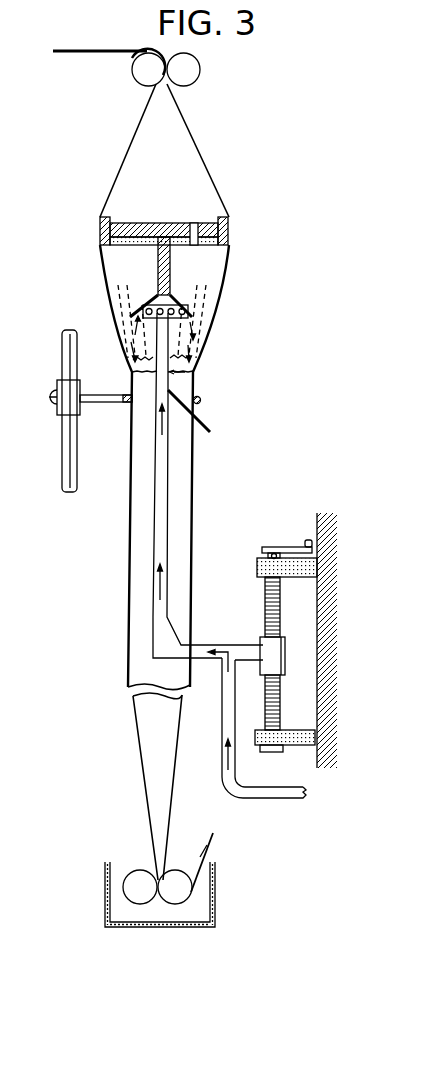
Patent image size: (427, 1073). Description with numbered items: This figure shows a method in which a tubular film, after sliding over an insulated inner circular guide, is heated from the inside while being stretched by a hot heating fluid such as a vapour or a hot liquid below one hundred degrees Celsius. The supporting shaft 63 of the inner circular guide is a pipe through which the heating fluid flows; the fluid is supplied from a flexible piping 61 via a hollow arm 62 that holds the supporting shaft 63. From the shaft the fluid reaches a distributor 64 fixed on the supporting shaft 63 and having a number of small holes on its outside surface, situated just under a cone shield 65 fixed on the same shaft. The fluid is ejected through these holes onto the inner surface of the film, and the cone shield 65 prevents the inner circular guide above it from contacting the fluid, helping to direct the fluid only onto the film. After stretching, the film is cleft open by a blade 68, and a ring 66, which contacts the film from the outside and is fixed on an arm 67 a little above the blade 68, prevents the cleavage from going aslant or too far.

The flexible piping 61 is at (268, 799).
The hollow arm 62 is at (201, 645).
The supporting shaft 63 is at (170, 382).
The distributor 64 is at (156, 300).
The cone shield 65 is at (172, 301).
The ring 66 is at (200, 397).
The arm 67 is at (67, 405).
The blade 68 is at (201, 423).